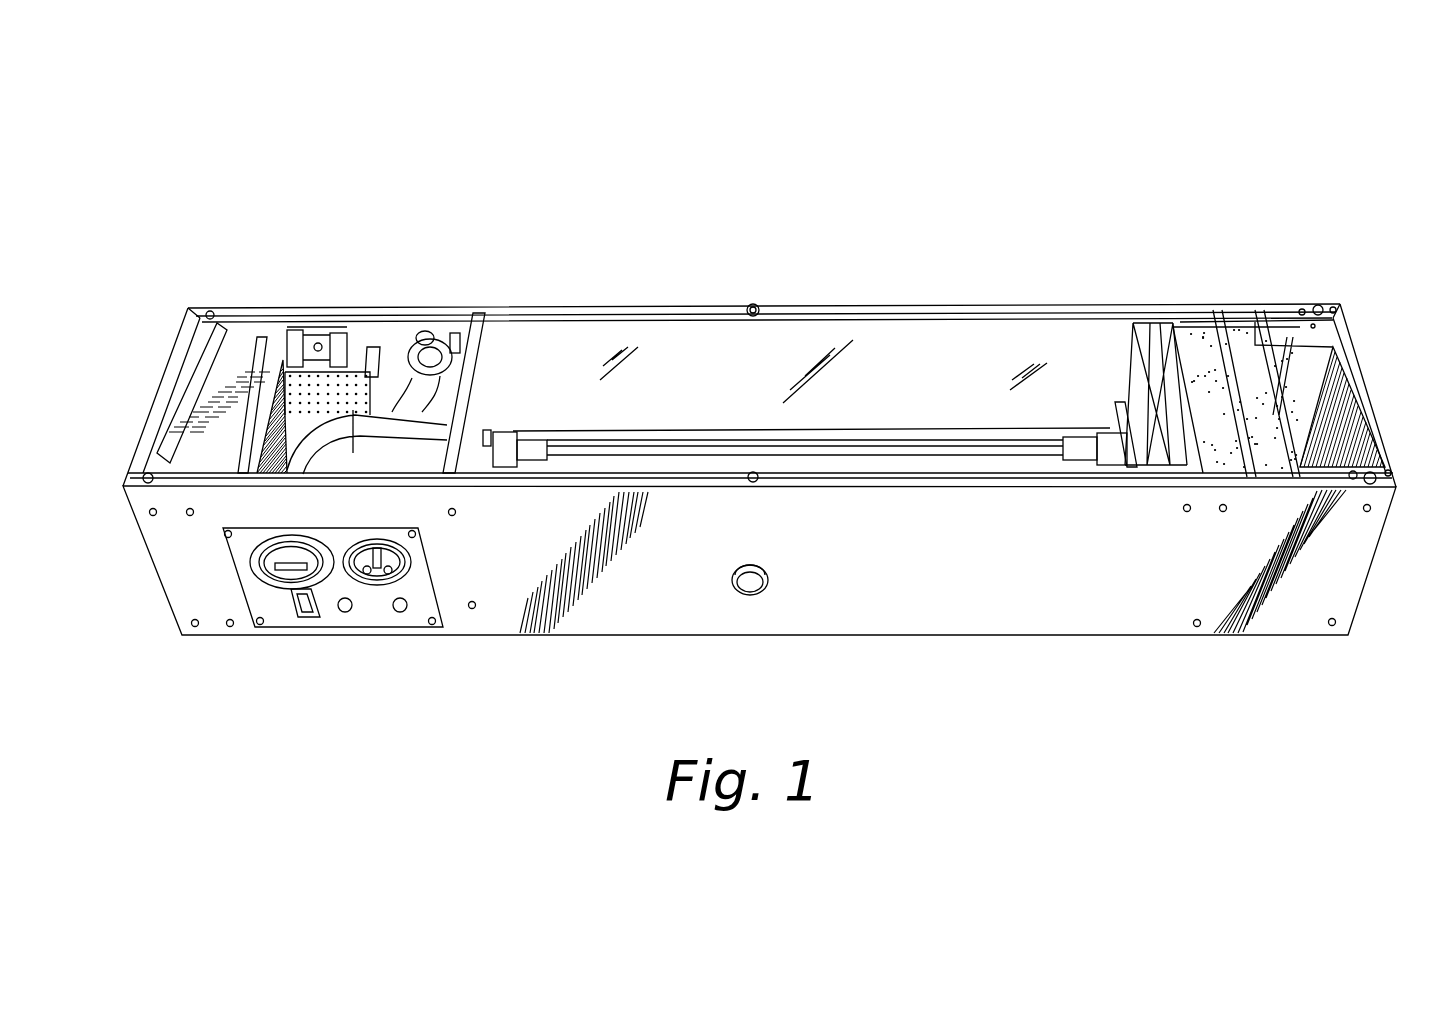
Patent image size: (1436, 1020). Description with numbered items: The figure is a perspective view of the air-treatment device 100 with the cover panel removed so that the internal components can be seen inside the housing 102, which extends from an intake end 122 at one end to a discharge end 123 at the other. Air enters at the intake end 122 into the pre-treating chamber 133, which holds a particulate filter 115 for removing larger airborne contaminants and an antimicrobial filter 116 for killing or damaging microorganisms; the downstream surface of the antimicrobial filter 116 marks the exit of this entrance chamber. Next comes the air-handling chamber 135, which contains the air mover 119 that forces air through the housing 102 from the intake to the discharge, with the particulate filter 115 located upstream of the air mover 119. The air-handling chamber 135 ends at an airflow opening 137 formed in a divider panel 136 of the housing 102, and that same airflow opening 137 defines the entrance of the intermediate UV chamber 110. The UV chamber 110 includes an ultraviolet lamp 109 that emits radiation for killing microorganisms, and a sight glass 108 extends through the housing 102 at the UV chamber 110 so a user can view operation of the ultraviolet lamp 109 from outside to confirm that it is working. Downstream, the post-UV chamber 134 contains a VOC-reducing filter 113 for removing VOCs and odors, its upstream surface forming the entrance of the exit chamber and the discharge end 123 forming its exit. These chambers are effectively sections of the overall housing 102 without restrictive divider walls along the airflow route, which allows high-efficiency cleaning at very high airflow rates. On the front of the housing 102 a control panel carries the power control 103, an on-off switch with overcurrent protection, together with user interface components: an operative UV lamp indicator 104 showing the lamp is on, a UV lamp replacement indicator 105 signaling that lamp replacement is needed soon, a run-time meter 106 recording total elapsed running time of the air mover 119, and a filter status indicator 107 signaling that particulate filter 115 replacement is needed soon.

The air-treatment device 100 is at (368, 135).
The housing 102 is at (980, 583).
The power control 103 is at (303, 620).
The operative UV lamp indicator 104 is at (345, 617).
The UV lamp replacement indicator 105 is at (403, 617).
The run-time meter 106 is at (252, 575).
The filter status indicator 107 is at (417, 573).
The sight glass 108 is at (750, 585).
The ultraviolet lamp 109 is at (950, 432).
The UV chamber 110 is at (708, 372).
The VOC-reducing filter 113 is at (1236, 330).
The particulate filter 115 is at (160, 455).
The antimicrobial filter 116 is at (237, 363).
The air mover 119 is at (372, 410).
The intake end 122 is at (153, 387).
The discharge end 123 is at (1378, 395).
The pre-treating chamber 133 is at (247, 303).
The post-UV chamber 134 is at (1283, 297).
The air-handling chamber 135 is at (400, 300).
The divider panel 136 is at (488, 308).
The airflow opening 137 is at (490, 430).